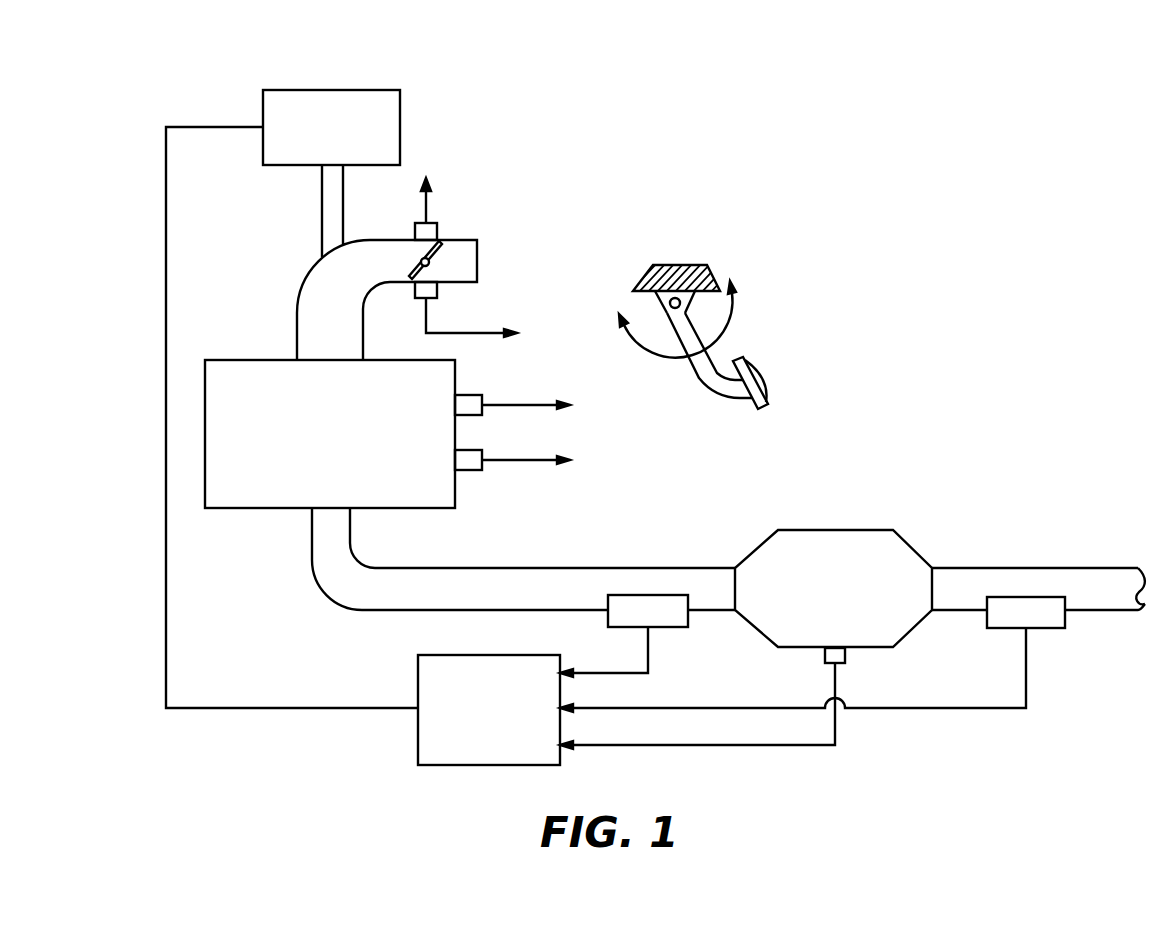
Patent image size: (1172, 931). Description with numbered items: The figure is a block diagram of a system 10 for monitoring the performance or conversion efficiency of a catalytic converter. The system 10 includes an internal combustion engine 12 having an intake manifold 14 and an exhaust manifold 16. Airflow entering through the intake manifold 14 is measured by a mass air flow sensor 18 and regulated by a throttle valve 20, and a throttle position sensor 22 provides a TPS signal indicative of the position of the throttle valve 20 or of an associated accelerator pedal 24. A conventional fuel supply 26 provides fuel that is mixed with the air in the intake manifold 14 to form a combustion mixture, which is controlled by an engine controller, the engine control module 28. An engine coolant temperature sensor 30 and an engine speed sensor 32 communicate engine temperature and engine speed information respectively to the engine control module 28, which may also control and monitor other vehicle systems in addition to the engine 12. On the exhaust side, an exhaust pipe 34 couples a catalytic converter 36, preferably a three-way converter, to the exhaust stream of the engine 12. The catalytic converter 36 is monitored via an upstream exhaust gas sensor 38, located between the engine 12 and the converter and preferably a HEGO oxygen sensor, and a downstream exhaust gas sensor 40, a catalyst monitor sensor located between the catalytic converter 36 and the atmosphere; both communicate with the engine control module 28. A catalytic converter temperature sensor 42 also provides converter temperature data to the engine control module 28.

The system 10 is at (676, 216).
The internal combustion engine 12 is at (457, 495).
The intake manifold 14 is at (477, 267).
The exhaust manifold 16 is at (317, 582).
The mass air flow sensor 18 is at (428, 207).
The throttle valve 20 is at (441, 272).
The throttle position sensor 22 is at (413, 288).
The accelerator pedal 24 is at (763, 377).
The fuel supply 26 is at (392, 88).
The engine control module 28 is at (418, 677).
The engine coolant temperature sensor 30 is at (475, 392).
The engine speed sensor 32 is at (475, 473).
The exhaust pipe 34 is at (613, 567).
The catalytic converter 36 is at (912, 540).
The upstream exhaust gas sensor 38 is at (690, 623).
The downstream exhaust gas sensor 40 is at (1067, 623).
The catalytic converter temperature sensor 42 is at (847, 653).